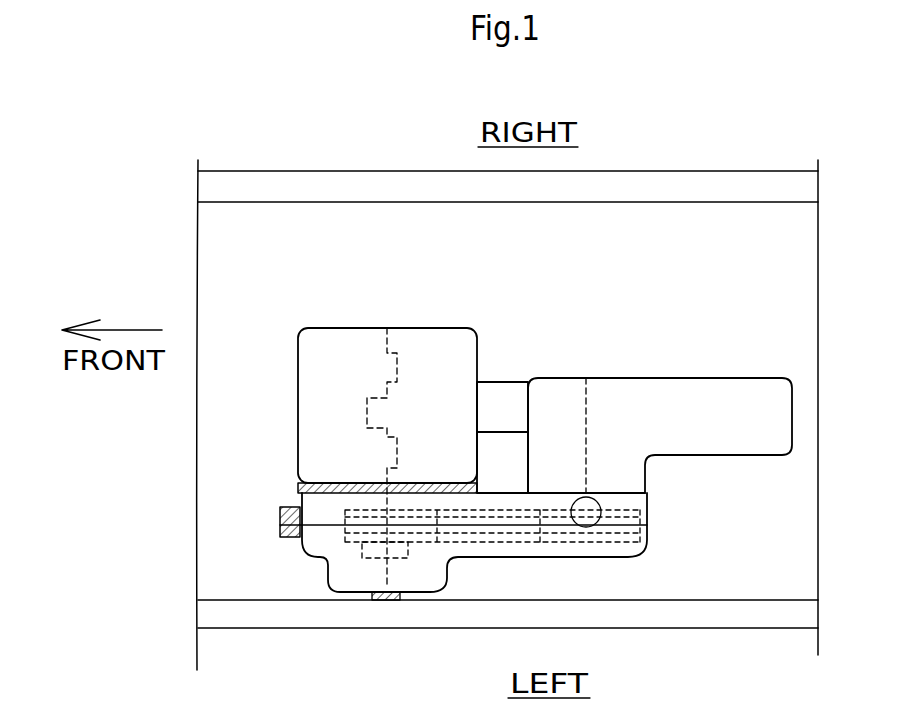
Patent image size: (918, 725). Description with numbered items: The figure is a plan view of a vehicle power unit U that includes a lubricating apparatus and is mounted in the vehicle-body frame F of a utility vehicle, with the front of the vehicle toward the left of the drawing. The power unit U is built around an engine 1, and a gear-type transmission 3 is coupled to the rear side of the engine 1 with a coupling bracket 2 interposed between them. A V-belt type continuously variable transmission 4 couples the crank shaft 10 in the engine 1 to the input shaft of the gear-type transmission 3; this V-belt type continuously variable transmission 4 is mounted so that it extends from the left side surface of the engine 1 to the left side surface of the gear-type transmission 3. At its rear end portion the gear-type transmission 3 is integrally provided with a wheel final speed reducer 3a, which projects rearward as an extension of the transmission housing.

The engine 1 is at (301, 377).
The coupling bracket 2 is at (498, 400).
The gear-type transmission 3 is at (645, 400).
The wheel final speed reducer 3a is at (753, 438).
The V-belt type continuously variable transmission 4 is at (563, 560).
The crank shaft 10 is at (385, 433).
The vehicle-body frame F is at (285, 188).
The power unit U is at (411, 311).